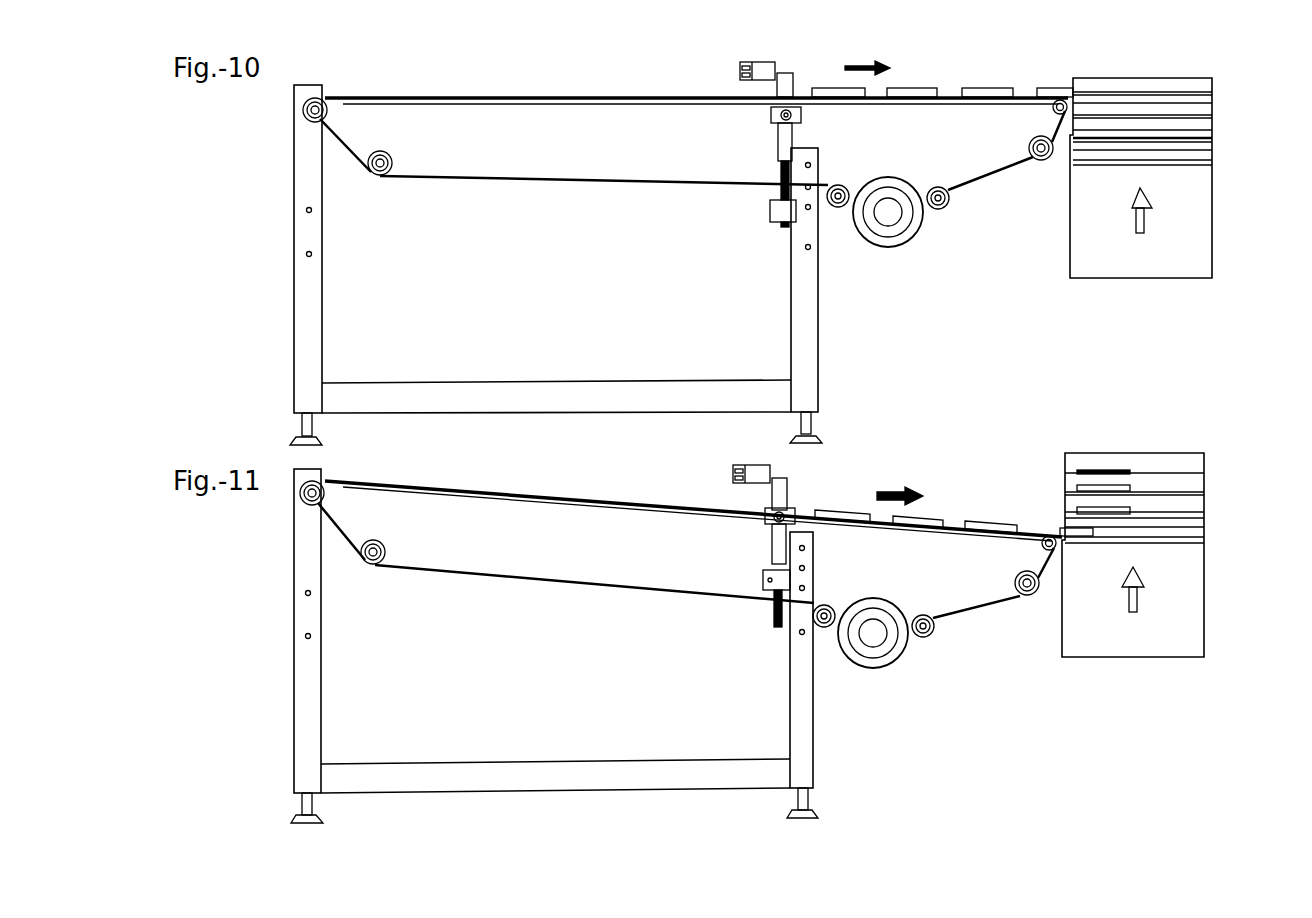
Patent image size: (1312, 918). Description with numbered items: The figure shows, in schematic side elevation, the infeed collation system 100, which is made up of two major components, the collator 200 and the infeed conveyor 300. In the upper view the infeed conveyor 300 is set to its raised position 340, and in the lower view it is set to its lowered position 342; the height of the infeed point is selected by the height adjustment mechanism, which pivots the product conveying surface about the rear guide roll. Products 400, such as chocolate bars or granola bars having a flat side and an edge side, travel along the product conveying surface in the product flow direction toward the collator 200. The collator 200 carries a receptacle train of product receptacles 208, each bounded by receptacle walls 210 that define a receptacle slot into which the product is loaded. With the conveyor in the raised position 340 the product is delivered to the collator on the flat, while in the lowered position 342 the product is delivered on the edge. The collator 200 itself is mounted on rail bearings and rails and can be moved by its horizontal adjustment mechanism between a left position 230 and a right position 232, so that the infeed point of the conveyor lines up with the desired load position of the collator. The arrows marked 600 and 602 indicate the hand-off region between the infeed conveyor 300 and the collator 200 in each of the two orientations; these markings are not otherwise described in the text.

In FIG. 10, the infeed collation system 100 is at (920, 255).
In FIG. 11, the infeed collation system 100 is at (995, 648).
In FIG. 10, the collator 200 is at (1162, 187).
In FIG. 11, the collator 200 is at (1173, 581).
In FIG. 11, the product receptacles 208 is at (1195, 500).
In FIG. 10, the receptacle walls 210 is at (1212, 90).
In FIG. 11, the left position 230 is at (1103, 642).
In FIG. 10, the right position 232 is at (1080, 258).
In FIG. 10, the infeed conveyor 300 is at (510, 168).
In FIG. 11, the infeed conveyor 300 is at (520, 560).
In FIG. 10, the raised position 340 is at (604, 75).
In FIG. 11, the lowered position 342 is at (922, 480).
In FIG. 10, the products 400 is at (912, 92).
In FIG. 11, the products 400 is at (1003, 525).
In FIG. 11, the transfer point 600 is at (1170, 440).
In FIG. 10, the transfer point 602 is at (1082, 68).